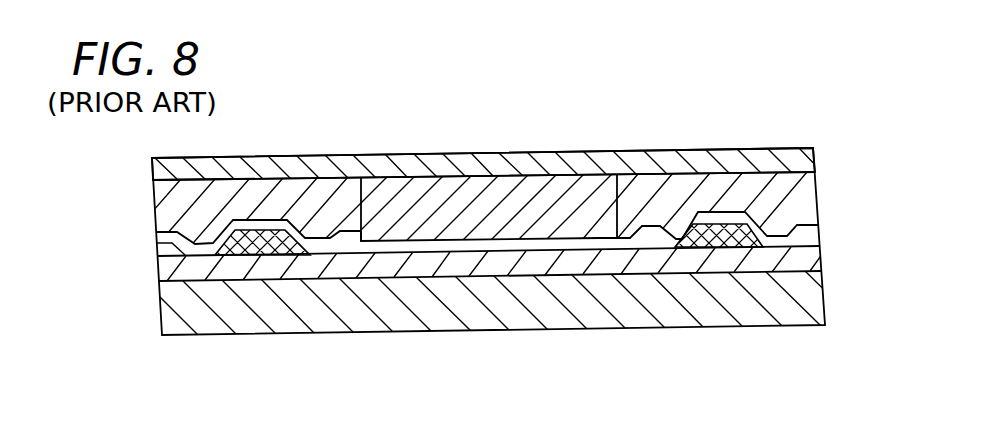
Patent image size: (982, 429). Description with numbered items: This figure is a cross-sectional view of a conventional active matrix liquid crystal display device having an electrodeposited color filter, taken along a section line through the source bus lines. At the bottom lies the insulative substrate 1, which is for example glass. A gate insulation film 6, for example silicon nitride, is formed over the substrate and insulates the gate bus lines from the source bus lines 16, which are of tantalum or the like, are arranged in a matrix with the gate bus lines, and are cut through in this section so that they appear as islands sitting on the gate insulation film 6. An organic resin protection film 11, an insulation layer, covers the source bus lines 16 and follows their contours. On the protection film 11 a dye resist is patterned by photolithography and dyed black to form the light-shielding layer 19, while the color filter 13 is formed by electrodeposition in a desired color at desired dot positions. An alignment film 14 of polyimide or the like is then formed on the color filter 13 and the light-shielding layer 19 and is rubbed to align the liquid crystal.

The insulative substrate 1 is at (513, 241).
The gate insulation film 6 is at (516, 262).
The organic resin protection film 11 is at (527, 230).
The color filter 13 is at (557, 190).
The alignment film 14 is at (760, 157).
The source bus line 16 is at (703, 244).
The light-shielding layer 19 is at (519, 169).